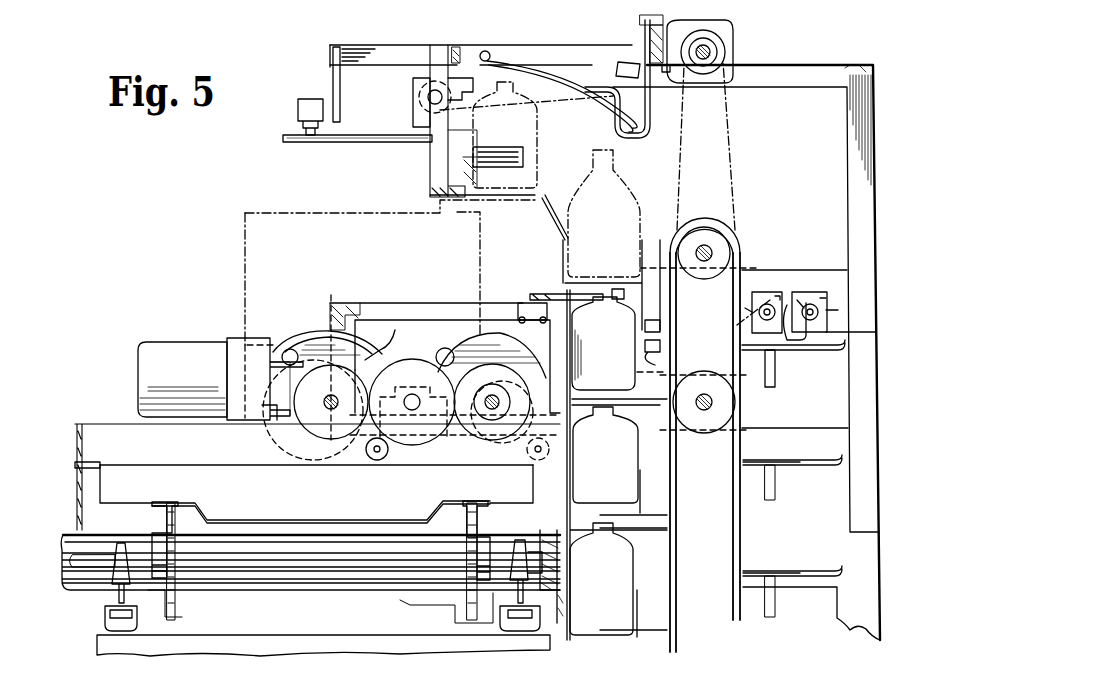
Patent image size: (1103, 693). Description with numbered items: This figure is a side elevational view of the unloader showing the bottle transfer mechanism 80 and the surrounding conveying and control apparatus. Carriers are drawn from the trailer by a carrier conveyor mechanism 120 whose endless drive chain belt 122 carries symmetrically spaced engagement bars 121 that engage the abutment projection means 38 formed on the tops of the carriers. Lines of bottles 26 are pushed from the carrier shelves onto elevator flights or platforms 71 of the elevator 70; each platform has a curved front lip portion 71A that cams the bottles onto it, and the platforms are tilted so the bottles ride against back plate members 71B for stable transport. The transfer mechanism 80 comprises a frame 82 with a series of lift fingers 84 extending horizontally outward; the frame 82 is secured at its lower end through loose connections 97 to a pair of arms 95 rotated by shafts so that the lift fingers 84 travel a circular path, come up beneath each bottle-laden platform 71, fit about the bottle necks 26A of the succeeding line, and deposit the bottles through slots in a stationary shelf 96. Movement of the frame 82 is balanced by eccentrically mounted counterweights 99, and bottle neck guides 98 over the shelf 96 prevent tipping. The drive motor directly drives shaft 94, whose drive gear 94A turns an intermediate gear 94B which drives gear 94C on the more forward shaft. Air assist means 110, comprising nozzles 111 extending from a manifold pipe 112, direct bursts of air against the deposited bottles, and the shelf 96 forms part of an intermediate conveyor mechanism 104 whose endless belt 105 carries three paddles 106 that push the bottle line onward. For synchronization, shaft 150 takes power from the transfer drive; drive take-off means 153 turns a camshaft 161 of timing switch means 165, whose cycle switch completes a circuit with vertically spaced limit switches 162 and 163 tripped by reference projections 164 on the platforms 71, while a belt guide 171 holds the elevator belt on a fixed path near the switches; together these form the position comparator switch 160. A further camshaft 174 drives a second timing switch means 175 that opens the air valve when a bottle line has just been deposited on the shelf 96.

The bottle 26 is at (626, 465).
The bottle neck 26A is at (612, 300).
The abutment projection means 38 is at (230, 602).
The elevator 70 is at (747, 185).
The elevator flight or platform 71 is at (608, 420).
The curved front lip portion 71A is at (563, 285).
The back plate member 71B is at (648, 225).
The bottle transfer mechanism 80 is at (234, 286).
The frame 82 is at (275, 215).
The lift fingers 84 is at (528, 297).
The shaft 94 is at (322, 424).
The drive gear 94A is at (338, 345).
The intermediate gear 94B is at (410, 358).
The gear 94C is at (458, 368).
The arms 95 is at (395, 357).
The stationary shelf 96 is at (445, 200).
The loose connections 97 is at (378, 460).
The bottle neck guides 98 is at (548, 65).
The eccentrically mounted counterweights 99 is at (318, 340).
The intermediate conveyor mechanism 104 is at (324, 146).
The endless belt 105 is at (396, 136).
The paddles 106 is at (510, 148).
The air assist means 110 is at (630, 56).
The nozzles 111 is at (612, 61).
The manifold pipe 112 is at (683, 62).
The carrier conveyor mechanism 120 is at (280, 509).
The engagement bars 121 is at (380, 512).
The endless drive chain belt 122 is at (482, 522).
The shaft 150 is at (704, 408).
The drive take-off means 153 is at (758, 370).
The position comparator switch 160 is at (769, 286).
The camshaft 161 is at (768, 336).
The limit switch 162 is at (622, 325).
The limit switch 163 is at (662, 342).
The reference projections 164 is at (748, 462).
The timing switch means 165 is at (780, 290).
The belt guide 171 is at (668, 510).
The camshaft 174 is at (867, 332).
The second timing switch means 175 is at (830, 314).